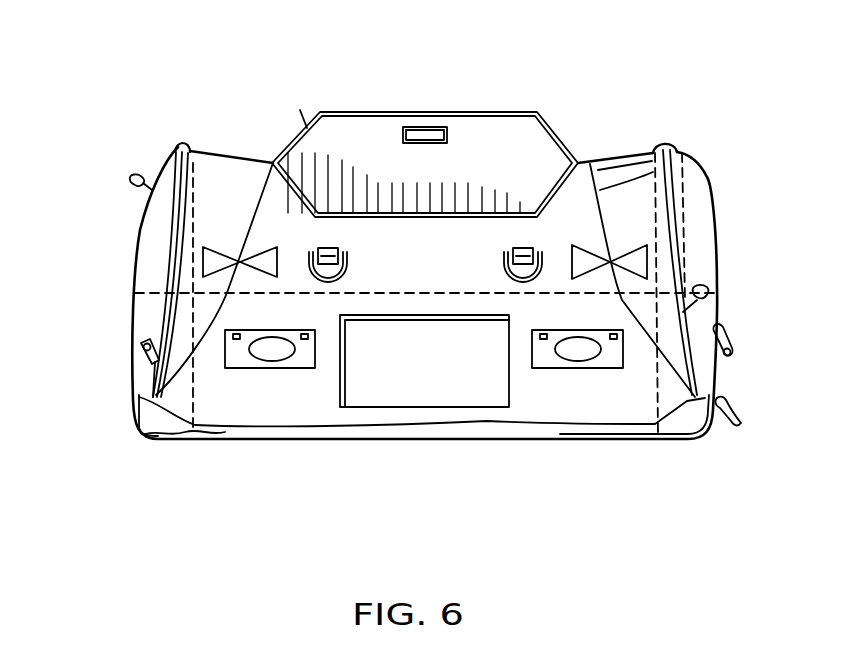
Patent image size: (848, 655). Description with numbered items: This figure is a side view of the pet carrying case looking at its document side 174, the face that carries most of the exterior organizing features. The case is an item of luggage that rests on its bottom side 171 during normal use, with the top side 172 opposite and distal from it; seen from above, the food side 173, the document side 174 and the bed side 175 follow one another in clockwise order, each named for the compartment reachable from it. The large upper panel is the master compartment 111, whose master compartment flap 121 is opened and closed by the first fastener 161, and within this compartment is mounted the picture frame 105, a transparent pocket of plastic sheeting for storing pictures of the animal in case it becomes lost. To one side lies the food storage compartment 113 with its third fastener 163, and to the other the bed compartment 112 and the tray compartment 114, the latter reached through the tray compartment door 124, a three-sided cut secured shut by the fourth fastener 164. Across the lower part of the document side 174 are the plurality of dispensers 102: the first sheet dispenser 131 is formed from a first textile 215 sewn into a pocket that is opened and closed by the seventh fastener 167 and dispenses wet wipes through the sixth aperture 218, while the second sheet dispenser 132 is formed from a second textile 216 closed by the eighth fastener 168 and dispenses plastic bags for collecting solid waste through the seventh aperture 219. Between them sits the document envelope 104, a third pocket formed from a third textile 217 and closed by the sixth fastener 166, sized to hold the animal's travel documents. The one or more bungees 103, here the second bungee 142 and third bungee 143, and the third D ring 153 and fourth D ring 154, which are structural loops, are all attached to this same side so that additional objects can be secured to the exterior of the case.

The plurality of dispensers 102 is at (270, 368).
The one or more bungees 103 is at (582, 247).
The document envelope 104 is at (418, 410).
The picture frame 105 is at (418, 126).
The master compartment 111 is at (533, 180).
The bed compartment 112 is at (715, 386).
The food storage compartment 113 is at (153, 216).
The tray compartment 114 is at (676, 155).
The master compartment flap 121 is at (425, 115).
The tray compartment door 124 is at (702, 170).
The first sheet dispenser 131 is at (312, 368).
The second sheet dispenser 132 is at (586, 368).
The second bungee 142 is at (170, 287).
The third bungee 143 is at (625, 250).
The third D ring 153 is at (342, 250).
The fourth D ring 154 is at (511, 253).
The first fastener 161 is at (300, 110).
The third fastener 163 is at (195, 190).
The fourth fastener 164 is at (645, 180).
The sixth fastener 166 is at (400, 315).
The seventh fastener 167 is at (236, 337).
The eighth fastener 168 is at (543, 335).
The bottom side 171 is at (673, 445).
The top side 172 is at (200, 150).
The food side 173 is at (140, 384).
The document side 174 is at (630, 400).
The bed side 175 is at (716, 313).
The first textile 215 is at (248, 368).
The second textile 216 is at (540, 368).
The third textile 217 is at (475, 390).
The sixth aperture 218 is at (260, 353).
The seventh aperture 219 is at (593, 352).